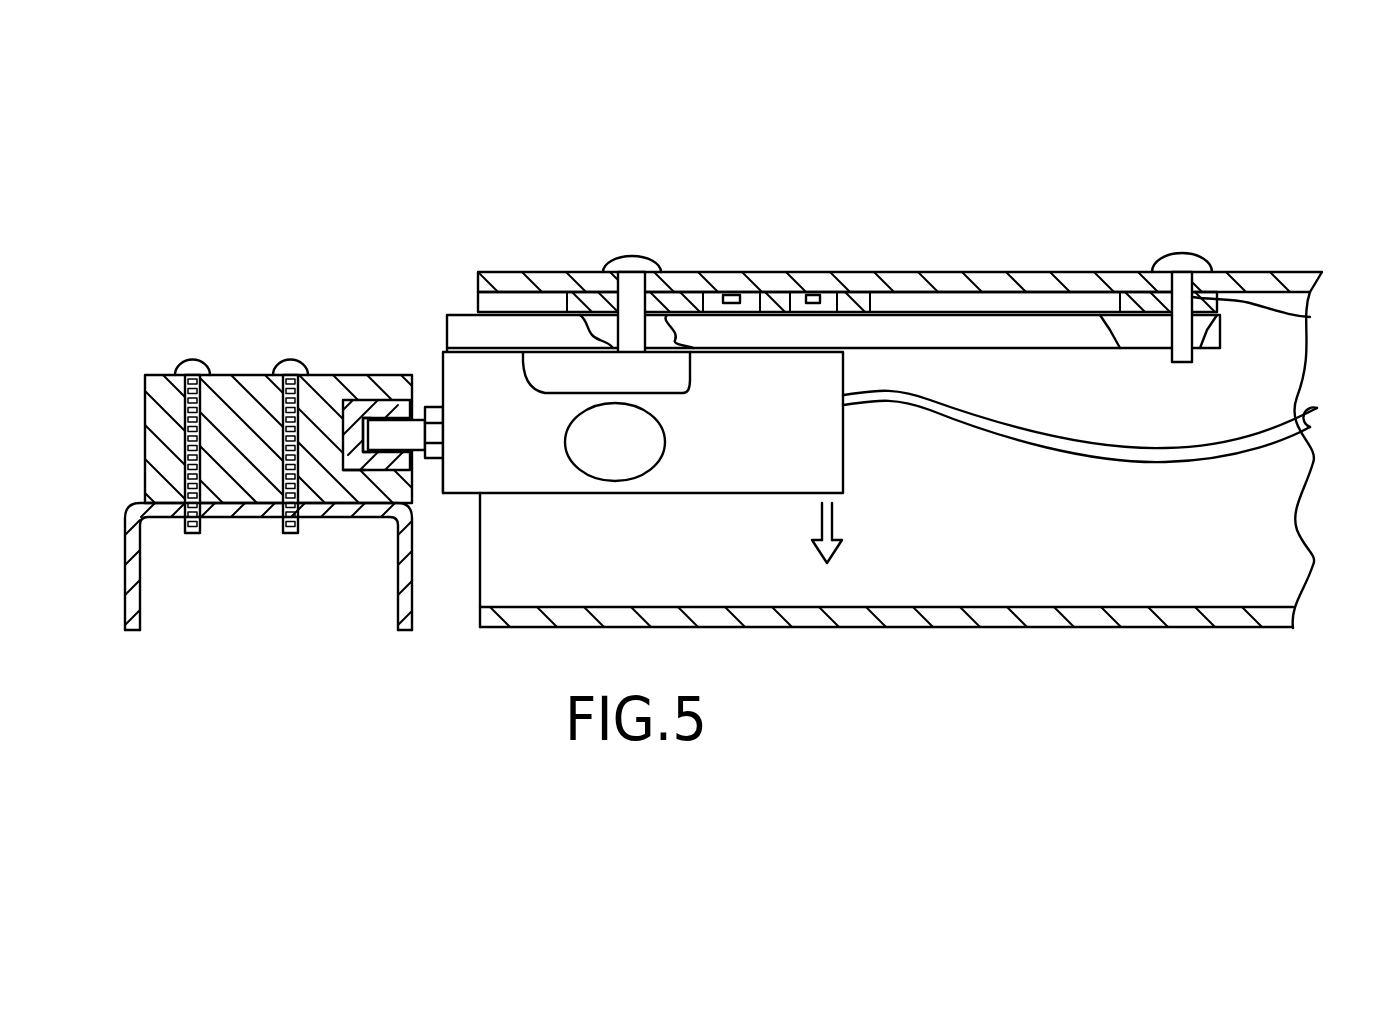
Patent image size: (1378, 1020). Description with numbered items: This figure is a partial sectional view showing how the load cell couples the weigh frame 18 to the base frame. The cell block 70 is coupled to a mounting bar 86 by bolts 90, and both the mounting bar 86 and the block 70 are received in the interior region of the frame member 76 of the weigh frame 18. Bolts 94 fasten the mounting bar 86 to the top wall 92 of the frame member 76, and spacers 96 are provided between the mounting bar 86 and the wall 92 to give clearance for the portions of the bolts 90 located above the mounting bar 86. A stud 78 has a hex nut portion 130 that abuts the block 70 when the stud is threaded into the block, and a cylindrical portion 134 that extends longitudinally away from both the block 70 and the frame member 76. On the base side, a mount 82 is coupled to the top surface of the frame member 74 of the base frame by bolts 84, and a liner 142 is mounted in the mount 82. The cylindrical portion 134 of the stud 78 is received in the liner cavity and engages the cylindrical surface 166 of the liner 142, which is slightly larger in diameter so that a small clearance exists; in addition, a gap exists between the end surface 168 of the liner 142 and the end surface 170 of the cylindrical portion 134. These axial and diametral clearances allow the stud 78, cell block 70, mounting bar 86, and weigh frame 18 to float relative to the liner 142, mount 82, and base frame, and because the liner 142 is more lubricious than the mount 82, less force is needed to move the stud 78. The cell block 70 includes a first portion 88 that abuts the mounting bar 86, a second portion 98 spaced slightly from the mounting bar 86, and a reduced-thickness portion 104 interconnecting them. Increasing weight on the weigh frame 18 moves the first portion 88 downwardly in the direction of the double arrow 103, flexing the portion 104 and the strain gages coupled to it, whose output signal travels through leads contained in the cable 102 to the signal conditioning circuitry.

The weigh frame 18 is at (1262, 195).
The cell block 70 is at (658, 508).
The frame member 74 is at (125, 585).
The frame member 76 is at (1252, 548).
The stud 78 is at (427, 476).
The mount 82 is at (135, 432).
The bolts 84 is at (197, 443).
The mounting bar 86 is at (962, 333).
The first portion 88 is at (843, 362).
The bolts 90 is at (750, 300).
The top wall 92 is at (1270, 273).
The bolts 94 is at (630, 272).
The spacers 96 is at (583, 298).
The second portion 98 is at (503, 370).
The cable 102 is at (1145, 462).
The double arrow 103 is at (833, 520).
The reduced-thickness portion 104 is at (673, 437).
The hex nut portion 130 is at (435, 407).
The cylindrical portion 134 is at (400, 433).
The liner 142 is at (366, 474).
The cylindrical surface 166 is at (387, 440).
The end surface 168 is at (352, 397).
The end surface 170 is at (347, 473).